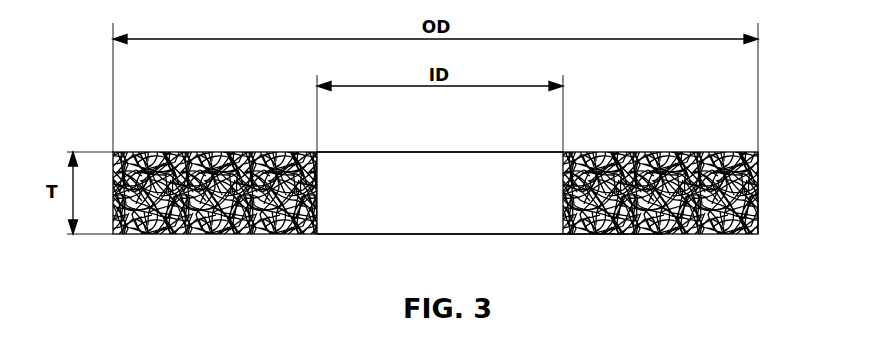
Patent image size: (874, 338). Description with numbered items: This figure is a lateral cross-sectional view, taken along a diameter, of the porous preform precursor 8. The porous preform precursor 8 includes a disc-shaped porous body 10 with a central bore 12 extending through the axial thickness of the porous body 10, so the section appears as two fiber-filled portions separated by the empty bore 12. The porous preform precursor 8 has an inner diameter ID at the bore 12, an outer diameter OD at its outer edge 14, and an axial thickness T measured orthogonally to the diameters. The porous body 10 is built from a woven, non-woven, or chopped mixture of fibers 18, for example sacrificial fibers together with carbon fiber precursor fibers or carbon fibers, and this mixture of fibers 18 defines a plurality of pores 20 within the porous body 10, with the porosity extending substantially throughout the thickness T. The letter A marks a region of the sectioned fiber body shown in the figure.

The porous preform precursor 8 is at (81, 131).
The disc-shaped porous body 10 is at (769, 185).
The central bore 12 is at (489, 163).
The outer edge 14 is at (758, 207).
The mixture of fibers 18 is at (688, 235).
The pores 20 is at (640, 152).
The bottom surface region A is at (603, 235).